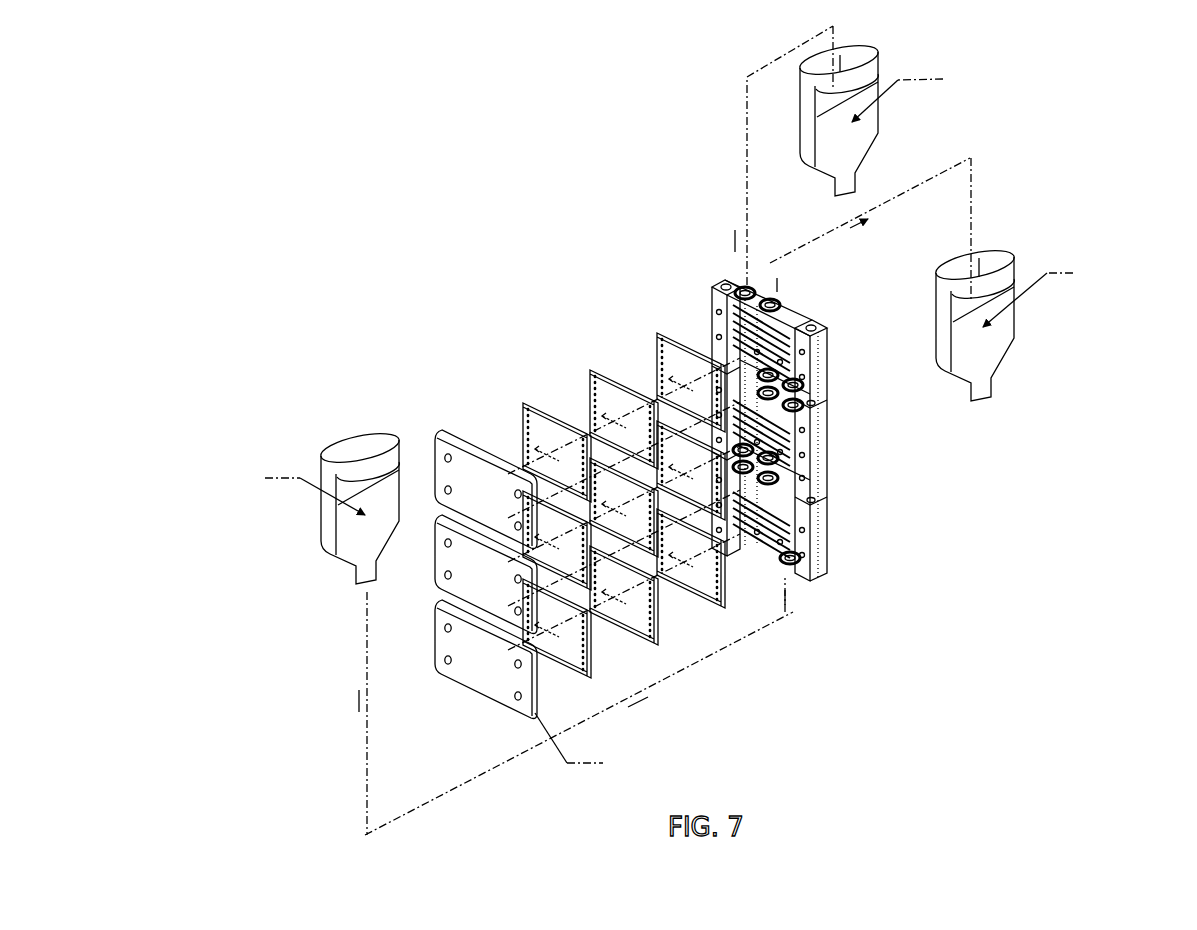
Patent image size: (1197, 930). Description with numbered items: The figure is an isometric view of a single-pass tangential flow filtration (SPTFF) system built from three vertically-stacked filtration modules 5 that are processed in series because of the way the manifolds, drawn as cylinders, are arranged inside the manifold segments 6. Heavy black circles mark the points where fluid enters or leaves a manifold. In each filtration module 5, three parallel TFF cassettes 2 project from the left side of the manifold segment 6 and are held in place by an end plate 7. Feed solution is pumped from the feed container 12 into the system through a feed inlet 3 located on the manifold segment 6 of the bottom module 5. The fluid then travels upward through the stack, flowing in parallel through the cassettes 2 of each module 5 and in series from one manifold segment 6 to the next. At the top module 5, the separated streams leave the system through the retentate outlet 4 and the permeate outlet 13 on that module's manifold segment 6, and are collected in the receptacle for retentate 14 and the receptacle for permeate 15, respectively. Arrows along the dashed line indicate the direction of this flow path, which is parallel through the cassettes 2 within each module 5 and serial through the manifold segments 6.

The TFF cassette 2 is at (660, 345).
The feed inlet 3 is at (795, 566).
The retentate outlet 4 is at (751, 287).
The filtration module 5 is at (837, 515).
The manifold segment 6 is at (820, 530).
The end plate 7 is at (433, 650).
The feed container 12 is at (336, 440).
The permeate outlet 13 is at (781, 298).
The receptacle for retentate 14 is at (879, 52).
The receptacle for permeate 15 is at (1014, 258).